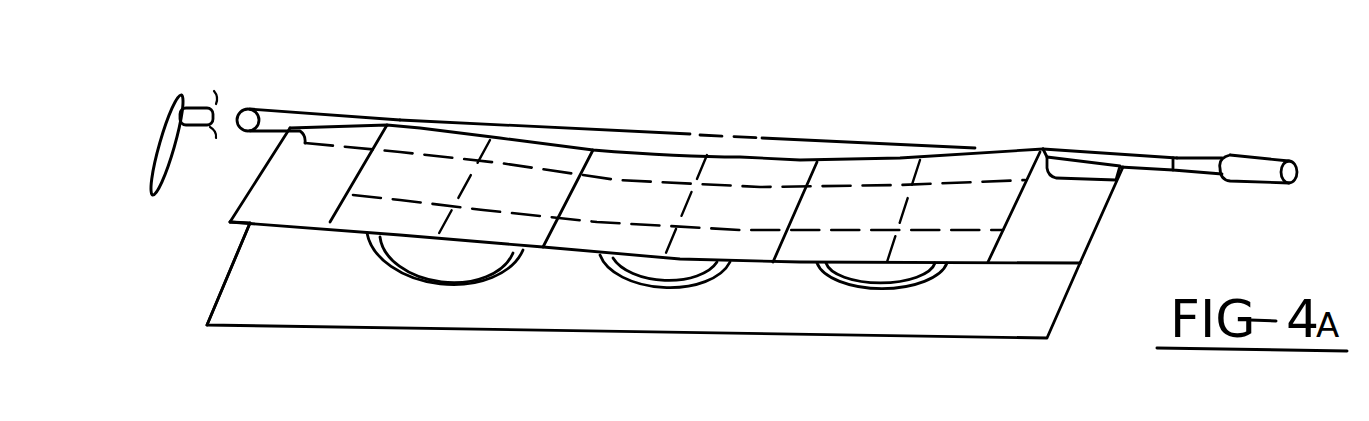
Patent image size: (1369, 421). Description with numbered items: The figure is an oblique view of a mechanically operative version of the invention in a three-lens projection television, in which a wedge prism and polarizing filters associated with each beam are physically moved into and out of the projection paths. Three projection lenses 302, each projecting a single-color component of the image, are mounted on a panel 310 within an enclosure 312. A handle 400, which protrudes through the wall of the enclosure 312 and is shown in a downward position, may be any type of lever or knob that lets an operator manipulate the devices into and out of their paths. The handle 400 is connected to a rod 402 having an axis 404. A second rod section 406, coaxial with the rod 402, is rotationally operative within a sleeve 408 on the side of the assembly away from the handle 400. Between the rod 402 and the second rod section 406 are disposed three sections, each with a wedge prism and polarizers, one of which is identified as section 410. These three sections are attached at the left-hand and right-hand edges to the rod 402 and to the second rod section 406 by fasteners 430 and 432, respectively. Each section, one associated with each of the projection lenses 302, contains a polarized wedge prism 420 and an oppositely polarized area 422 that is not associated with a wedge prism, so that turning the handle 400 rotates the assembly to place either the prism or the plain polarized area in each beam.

The projection lenses 302 is at (423, 262).
The panel 310 is at (982, 318).
The enclosure 312 is at (188, 274).
The handle 400 is at (165, 118).
The rod 402 is at (297, 80).
The axis 404 is at (813, 140).
The second rod section 406 is at (1210, 120).
The sleeve 408 is at (1262, 165).
The section 410 is at (665, 133).
The polarized wedge prism 420 is at (430, 100).
The oppositely polarized area 422 is at (433, 121).
The fastener 430 is at (358, 114).
The fastener 432 is at (1143, 103).